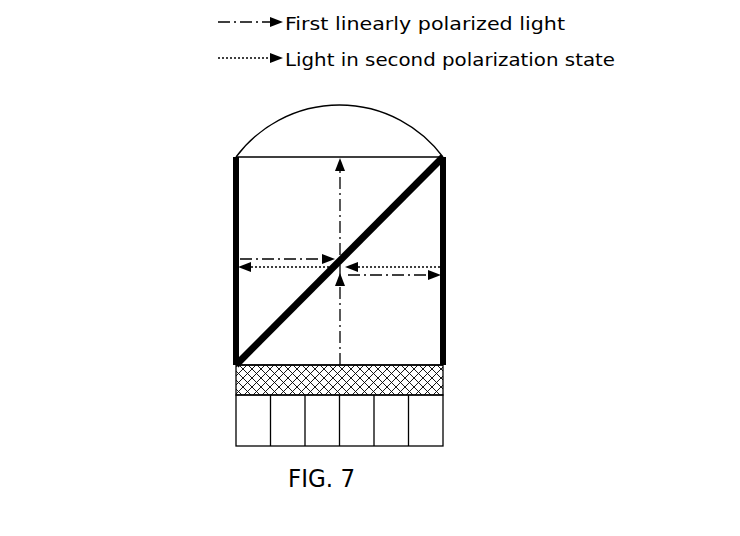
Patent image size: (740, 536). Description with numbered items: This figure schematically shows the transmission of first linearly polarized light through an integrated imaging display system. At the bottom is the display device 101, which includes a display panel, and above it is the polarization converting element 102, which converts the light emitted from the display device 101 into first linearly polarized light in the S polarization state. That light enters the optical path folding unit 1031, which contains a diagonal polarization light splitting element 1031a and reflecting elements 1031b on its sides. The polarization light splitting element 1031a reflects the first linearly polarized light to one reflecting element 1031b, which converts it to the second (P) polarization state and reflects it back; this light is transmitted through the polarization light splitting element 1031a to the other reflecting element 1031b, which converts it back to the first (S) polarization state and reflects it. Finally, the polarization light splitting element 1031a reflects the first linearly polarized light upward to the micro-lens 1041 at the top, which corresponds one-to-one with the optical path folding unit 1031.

The optical path folding unit 1031 is at (238, 261).
The polarization light splitting element 1031a is at (275, 304).
The reflecting element 1031b is at (226, 184).
The micro-lens 1041 is at (448, 133).
The polarization converting element 102 is at (456, 380).
The display device 101 is at (456, 423).